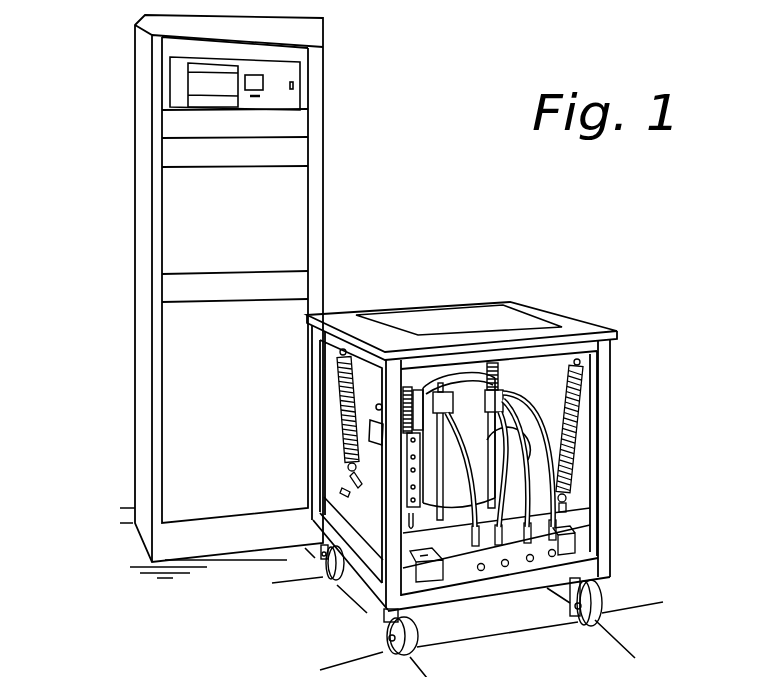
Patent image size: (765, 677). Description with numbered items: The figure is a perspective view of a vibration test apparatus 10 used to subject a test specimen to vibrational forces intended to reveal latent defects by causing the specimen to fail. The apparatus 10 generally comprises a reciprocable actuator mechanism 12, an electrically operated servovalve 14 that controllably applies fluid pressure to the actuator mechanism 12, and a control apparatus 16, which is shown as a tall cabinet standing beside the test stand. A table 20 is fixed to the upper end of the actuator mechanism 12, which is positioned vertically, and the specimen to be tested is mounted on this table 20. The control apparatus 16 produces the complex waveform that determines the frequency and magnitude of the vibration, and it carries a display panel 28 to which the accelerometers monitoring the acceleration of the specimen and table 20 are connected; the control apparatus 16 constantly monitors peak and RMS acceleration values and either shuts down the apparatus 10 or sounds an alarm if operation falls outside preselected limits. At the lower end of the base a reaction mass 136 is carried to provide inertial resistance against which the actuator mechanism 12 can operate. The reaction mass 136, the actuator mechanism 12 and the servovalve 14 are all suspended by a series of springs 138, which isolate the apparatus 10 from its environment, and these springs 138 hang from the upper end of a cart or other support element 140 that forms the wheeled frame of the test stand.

The apparatus 10 is at (418, 139).
The reciprocable actuator mechanism 12 is at (469, 390).
The servovalve 14 is at (378, 404).
The control apparatus 16 is at (323, 92).
The table 20 is at (478, 314).
The display panel 28 is at (283, 62).
The reaction mass 136 is at (375, 523).
The springs 138 is at (350, 433).
The cart or other support element 140 is at (605, 382).